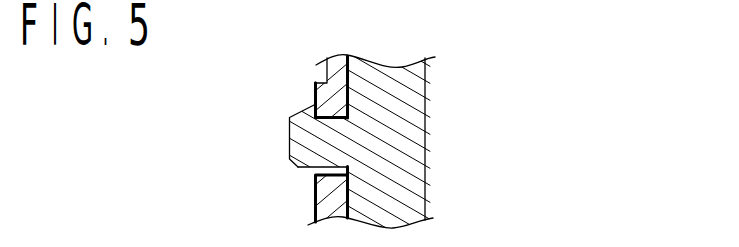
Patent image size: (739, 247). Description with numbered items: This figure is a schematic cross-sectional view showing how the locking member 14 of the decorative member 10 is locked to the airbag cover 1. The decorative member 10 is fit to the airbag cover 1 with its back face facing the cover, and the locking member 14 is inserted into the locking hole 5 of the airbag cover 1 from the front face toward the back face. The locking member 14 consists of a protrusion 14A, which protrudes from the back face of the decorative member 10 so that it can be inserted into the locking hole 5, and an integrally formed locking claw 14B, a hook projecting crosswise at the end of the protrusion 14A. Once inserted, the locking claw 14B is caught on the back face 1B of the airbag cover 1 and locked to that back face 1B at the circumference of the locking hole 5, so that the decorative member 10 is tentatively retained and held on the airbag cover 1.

The decorative member 10 is at (415, 136).
The back face 1B is at (313, 95).
The airbag cover 1 is at (315, 202).
The locking member 14 is at (204, 125).
The protrusion 14A is at (320, 143).
The locking claw 14B is at (315, 104).
The locking hole 5 is at (313, 172).